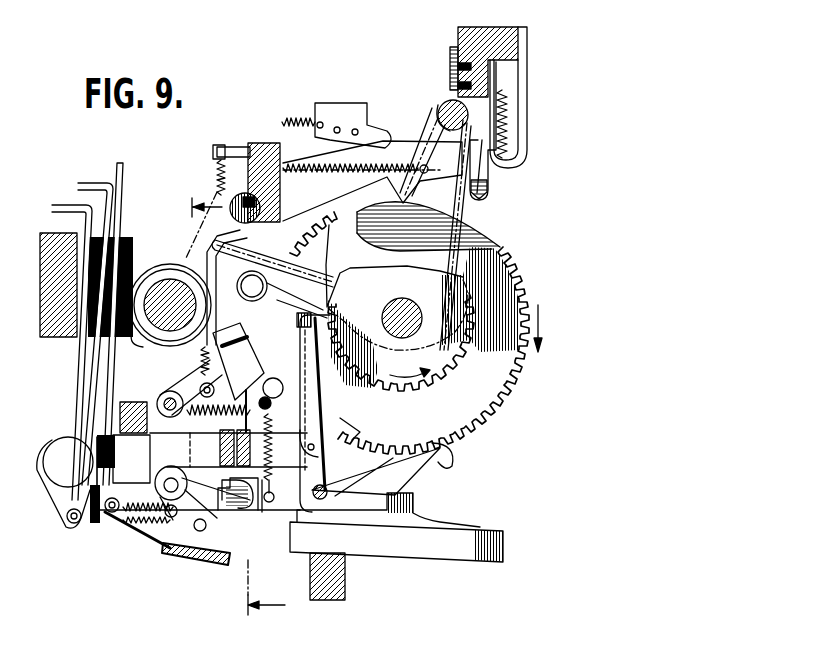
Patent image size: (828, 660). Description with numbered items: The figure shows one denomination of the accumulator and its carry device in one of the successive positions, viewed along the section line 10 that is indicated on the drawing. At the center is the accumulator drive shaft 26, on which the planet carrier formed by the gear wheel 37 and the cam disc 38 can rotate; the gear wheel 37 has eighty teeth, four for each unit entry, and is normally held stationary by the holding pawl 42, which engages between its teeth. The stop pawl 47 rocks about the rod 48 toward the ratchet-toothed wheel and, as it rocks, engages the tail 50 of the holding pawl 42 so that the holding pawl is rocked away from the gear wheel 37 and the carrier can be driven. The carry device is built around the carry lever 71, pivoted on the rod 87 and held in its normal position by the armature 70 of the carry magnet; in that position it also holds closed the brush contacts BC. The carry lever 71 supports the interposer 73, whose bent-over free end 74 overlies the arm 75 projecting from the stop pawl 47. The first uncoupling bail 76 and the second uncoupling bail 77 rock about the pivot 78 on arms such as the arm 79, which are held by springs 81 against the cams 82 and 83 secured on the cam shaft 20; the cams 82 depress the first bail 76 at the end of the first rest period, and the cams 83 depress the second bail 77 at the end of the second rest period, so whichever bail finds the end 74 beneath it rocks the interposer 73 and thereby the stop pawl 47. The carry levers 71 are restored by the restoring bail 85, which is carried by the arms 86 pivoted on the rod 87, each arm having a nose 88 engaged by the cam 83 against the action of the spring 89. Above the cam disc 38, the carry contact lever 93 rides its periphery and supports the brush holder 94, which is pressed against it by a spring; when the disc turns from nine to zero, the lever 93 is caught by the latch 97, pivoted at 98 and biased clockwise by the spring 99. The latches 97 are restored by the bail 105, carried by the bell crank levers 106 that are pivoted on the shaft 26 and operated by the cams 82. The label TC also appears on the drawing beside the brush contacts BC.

The section line 10- 10 is at (226, 405).
The cam shaft 20 is at (164, 287).
The accumulator drive shaft 26 is at (391, 308).
The gear wheel 37 is at (470, 405).
The cam disc 38 is at (467, 240).
The holding pawl 42 is at (440, 462).
The stop pawl 47 is at (313, 375).
The rod 48 is at (322, 487).
The tail 50 is at (353, 431).
The armature 70 is at (177, 561).
The carry lever 71 is at (147, 535).
The interposer 73 is at (212, 500).
The free end 74 is at (240, 510).
The arm 75 is at (262, 512).
The first uncoupling bail 76 is at (269, 434).
The second uncoupling bail 77 is at (269, 463).
The pivot 78 is at (55, 458).
The arm 79 is at (115, 523).
The spring 81 is at (197, 531).
The cam 82 is at (203, 268).
The cam 83 is at (228, 330).
The restoring bail 85 is at (185, 444).
The arm 86 is at (203, 376).
The rod 87 is at (168, 404).
The nose 88 is at (231, 343).
The spring 89 is at (215, 173).
The carry contact lever 93 is at (393, 158).
The brush holder 94 is at (343, 117).
The latch 97 is at (295, 115).
The pivot 98 is at (467, 69).
The spring 99 is at (505, 123).
The bail 105 is at (445, 105).
The bell crank lever 106 is at (272, 258).
The tape carriage line TC is at (72, 433).
The brush contacts BC is at (58, 488).